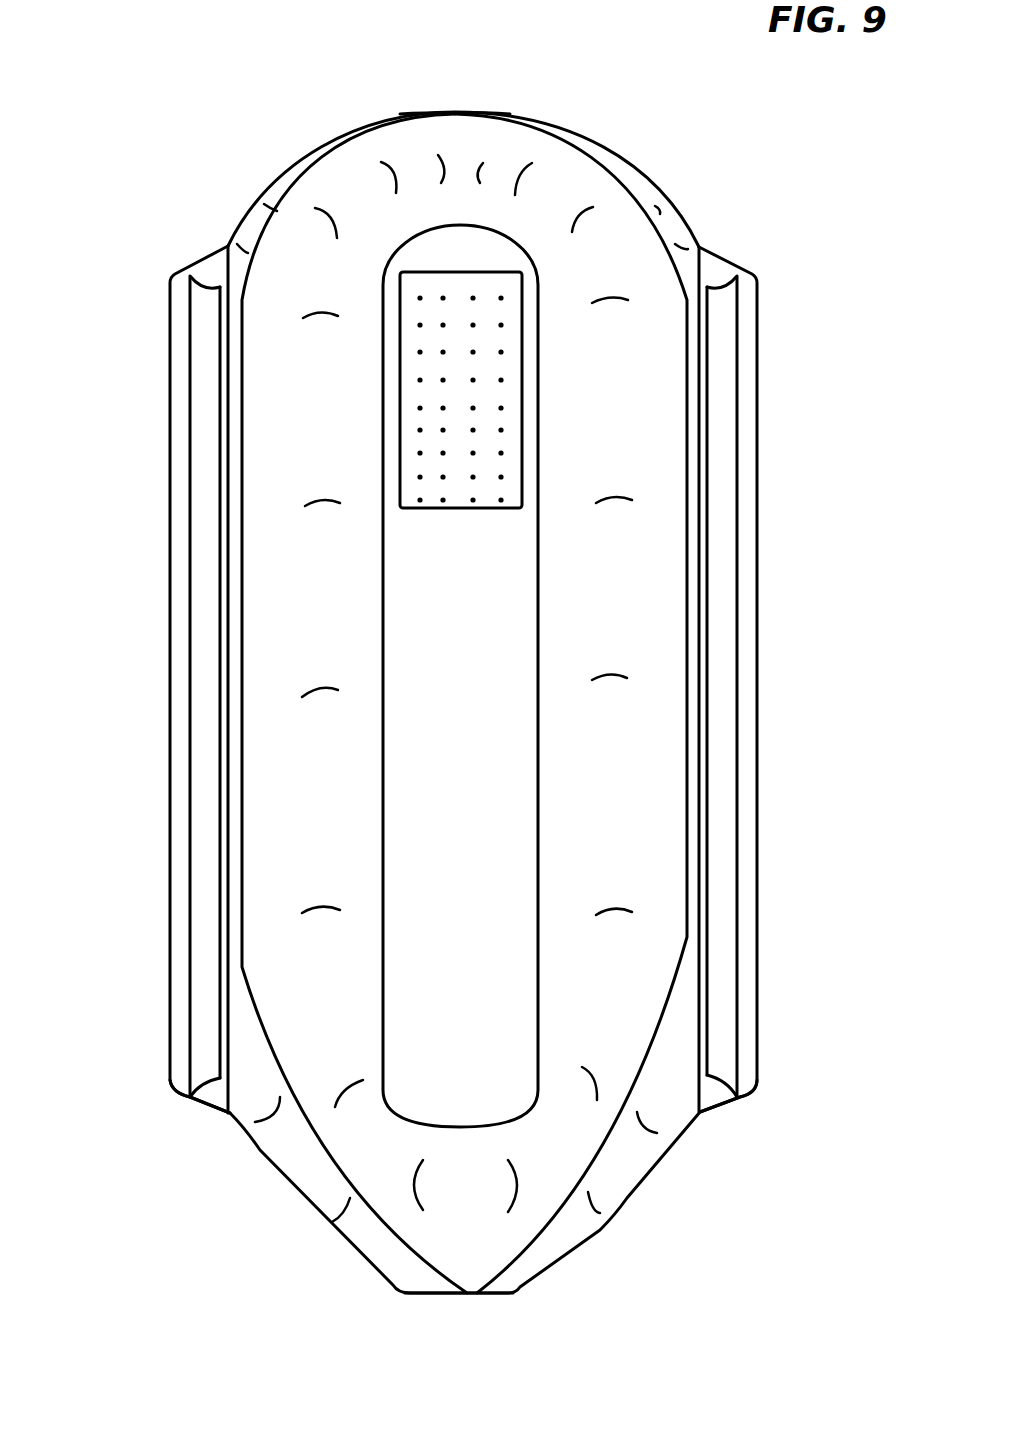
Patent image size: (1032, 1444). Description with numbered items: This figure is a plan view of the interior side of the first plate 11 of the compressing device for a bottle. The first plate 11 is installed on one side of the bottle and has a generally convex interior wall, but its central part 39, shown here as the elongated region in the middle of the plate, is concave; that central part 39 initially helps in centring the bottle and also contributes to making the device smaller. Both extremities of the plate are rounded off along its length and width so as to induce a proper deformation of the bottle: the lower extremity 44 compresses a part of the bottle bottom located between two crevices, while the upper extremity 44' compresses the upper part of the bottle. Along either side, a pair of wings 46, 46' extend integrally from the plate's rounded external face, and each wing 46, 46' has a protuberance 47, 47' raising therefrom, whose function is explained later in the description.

The first plate 11 is at (455, 88).
The central part 39 is at (470, 768).
The lower extremity 44 is at (498, 1321).
The upper extremity 44' is at (513, 83).
The wing 46 is at (140, 679).
The wing 46' is at (770, 679).
The protuberance 47 is at (165, 1124).
The protuberance 47' is at (771, 1118).